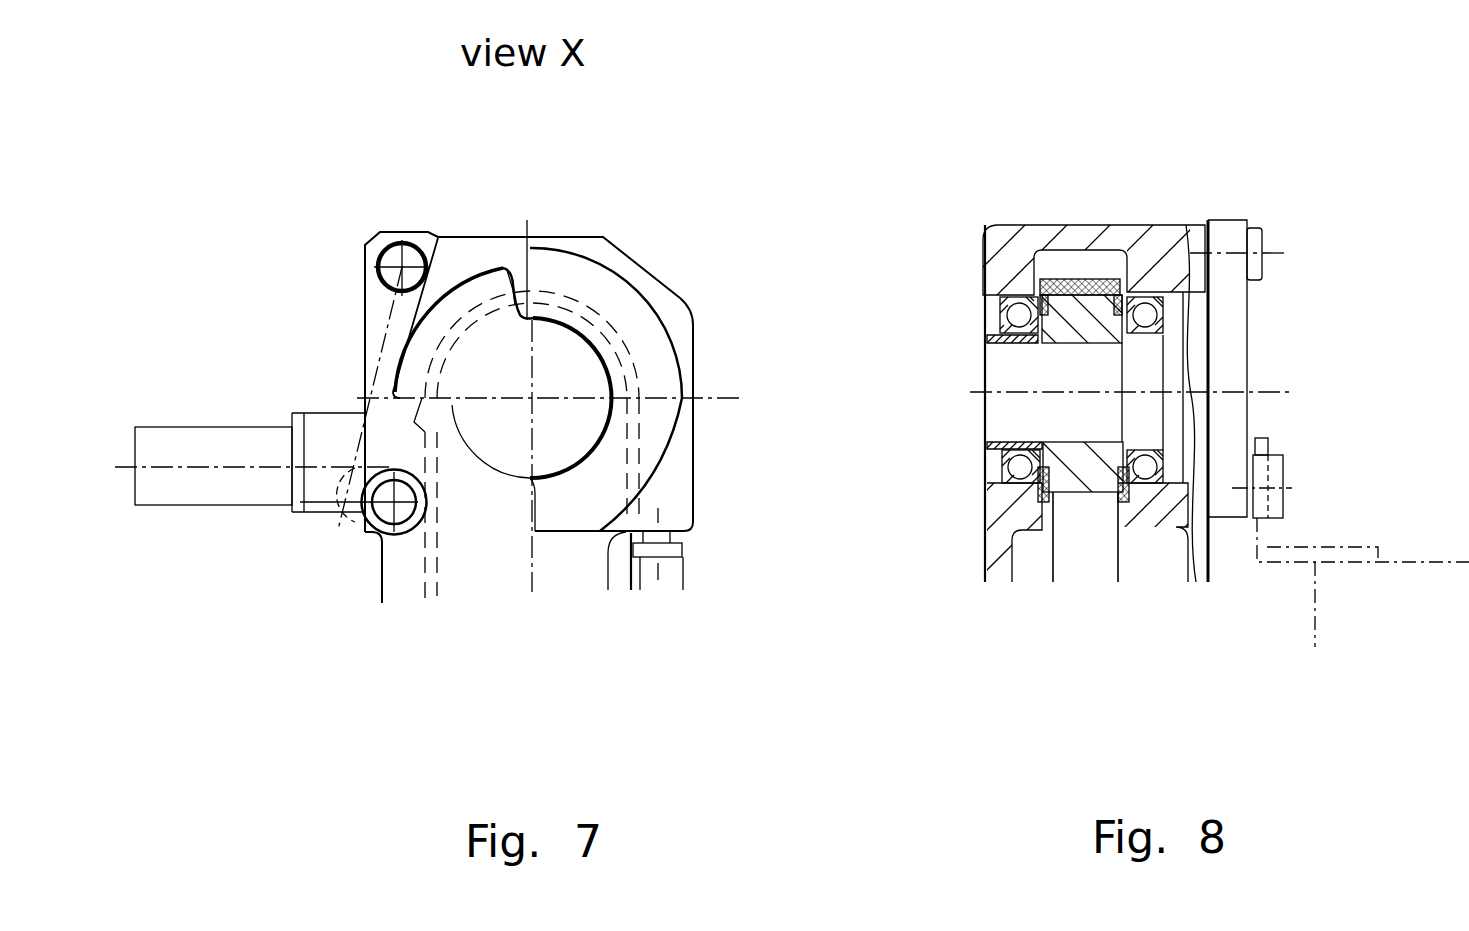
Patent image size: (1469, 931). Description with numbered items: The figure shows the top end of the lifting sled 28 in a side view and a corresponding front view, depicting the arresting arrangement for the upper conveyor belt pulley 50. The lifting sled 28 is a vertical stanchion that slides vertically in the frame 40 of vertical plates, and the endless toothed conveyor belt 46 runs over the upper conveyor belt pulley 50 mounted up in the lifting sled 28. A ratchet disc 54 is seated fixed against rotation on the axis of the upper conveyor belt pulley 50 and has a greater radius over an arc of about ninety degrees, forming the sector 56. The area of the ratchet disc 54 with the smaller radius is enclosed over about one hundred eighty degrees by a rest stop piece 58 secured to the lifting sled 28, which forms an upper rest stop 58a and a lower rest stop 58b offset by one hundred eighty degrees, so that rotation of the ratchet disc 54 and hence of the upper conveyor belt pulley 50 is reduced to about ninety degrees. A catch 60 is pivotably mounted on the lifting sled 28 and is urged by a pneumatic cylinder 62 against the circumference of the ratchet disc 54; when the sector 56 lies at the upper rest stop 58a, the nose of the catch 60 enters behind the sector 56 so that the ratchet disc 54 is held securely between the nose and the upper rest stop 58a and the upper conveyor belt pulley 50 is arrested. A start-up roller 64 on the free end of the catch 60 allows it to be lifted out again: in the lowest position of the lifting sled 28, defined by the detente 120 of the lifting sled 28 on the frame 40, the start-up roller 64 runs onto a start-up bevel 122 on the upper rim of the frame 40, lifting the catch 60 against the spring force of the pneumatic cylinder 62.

In FIG. 7, the lifting sled 28 is at (662, 293).
In FIG. 8, the lifting sled 28 is at (1158, 253).
In FIG. 8, the frame 40 is at (1368, 600).
In FIG. 8, the endless toothed conveyor belt 46 is at (1087, 552).
In FIG. 8, the upper conveyor belt pulley 50 is at (1080, 477).
In FIG. 7, the ratchet disc 54 is at (563, 426).
In FIG. 7, the sector 56 is at (452, 297).
In FIG. 7, the rest stop piece 58 is at (650, 355).
In FIG. 7, the upper rest stop 58a is at (527, 258).
In FIG. 7, the lower rest stop 58b is at (532, 507).
In FIG. 7, the catch 60 is at (375, 323).
In FIG. 8, the catch 60 is at (1232, 325).
In FIG. 7, the pneumatic cylinder 62 is at (265, 440).
In FIG. 7, the start-up roller 64 is at (387, 512).
In FIG. 8, the start-up roller 64 is at (1277, 478).
In FIG. 7, the detente 120 is at (672, 550).
In FIG. 8, the start-up bevel 122 is at (1267, 547).